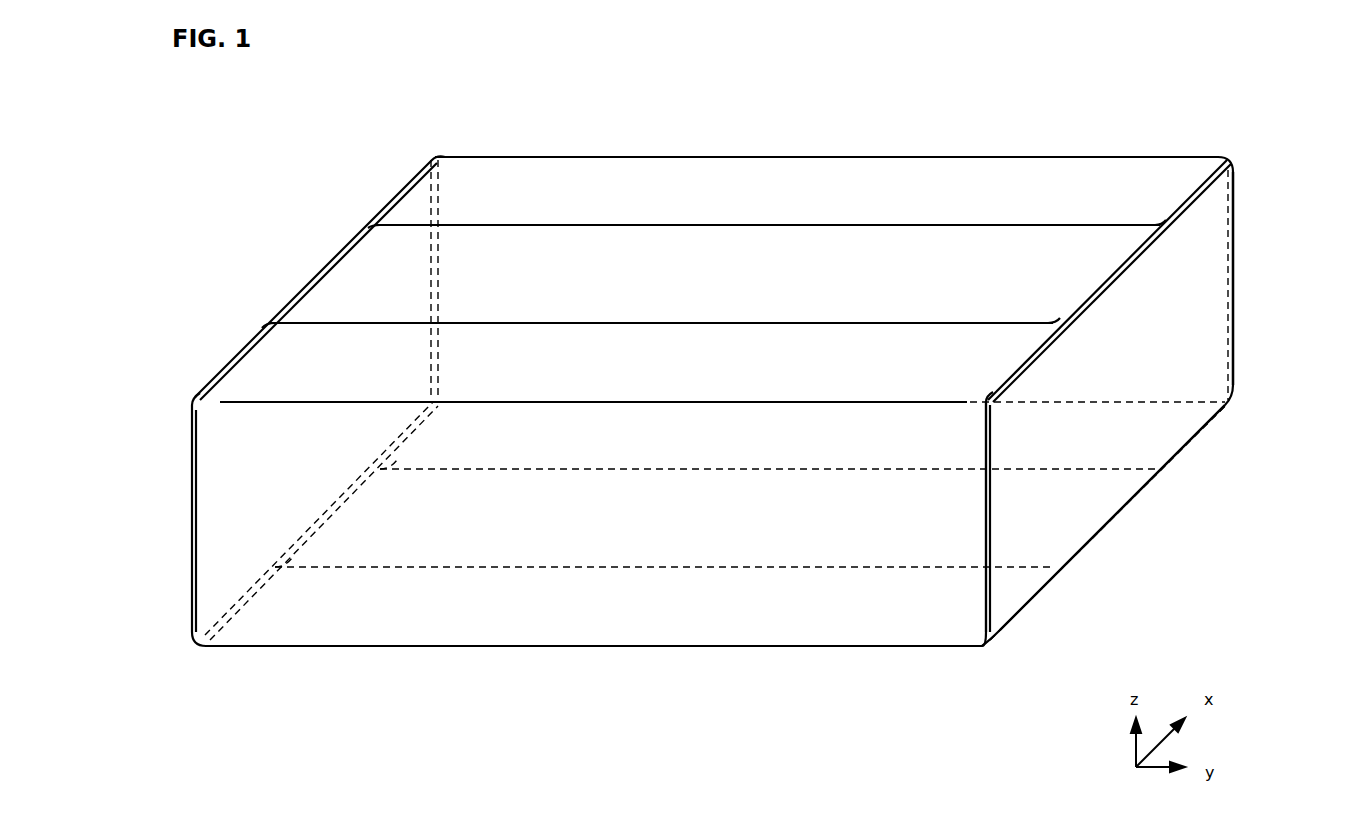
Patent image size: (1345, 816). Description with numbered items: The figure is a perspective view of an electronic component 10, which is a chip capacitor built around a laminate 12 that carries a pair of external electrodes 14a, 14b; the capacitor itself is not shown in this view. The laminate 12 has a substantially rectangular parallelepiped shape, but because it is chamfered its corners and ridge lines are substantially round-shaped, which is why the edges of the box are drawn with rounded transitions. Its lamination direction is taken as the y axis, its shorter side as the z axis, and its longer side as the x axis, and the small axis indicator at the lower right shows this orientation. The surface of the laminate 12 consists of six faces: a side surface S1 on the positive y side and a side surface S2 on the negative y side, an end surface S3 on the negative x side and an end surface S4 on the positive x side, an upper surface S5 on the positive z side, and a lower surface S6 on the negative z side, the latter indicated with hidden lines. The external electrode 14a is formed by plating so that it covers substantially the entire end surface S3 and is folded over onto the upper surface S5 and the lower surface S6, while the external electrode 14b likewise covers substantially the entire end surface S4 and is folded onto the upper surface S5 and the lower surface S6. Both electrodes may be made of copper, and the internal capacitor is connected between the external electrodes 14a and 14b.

The electronic component 10 is at (426, 76).
The laminate 12 is at (1132, 147).
The external electrode 14a is at (943, 595).
The external electrode 14b is at (1200, 345).
The side surface S1 is at (1105, 456).
The side surface S2 is at (302, 340).
The end surface S3 is at (876, 555).
The end surface S4 is at (1153, 183).
The upper surface S5 is at (378, 290).
The lower surface S6 is at (1063, 517).